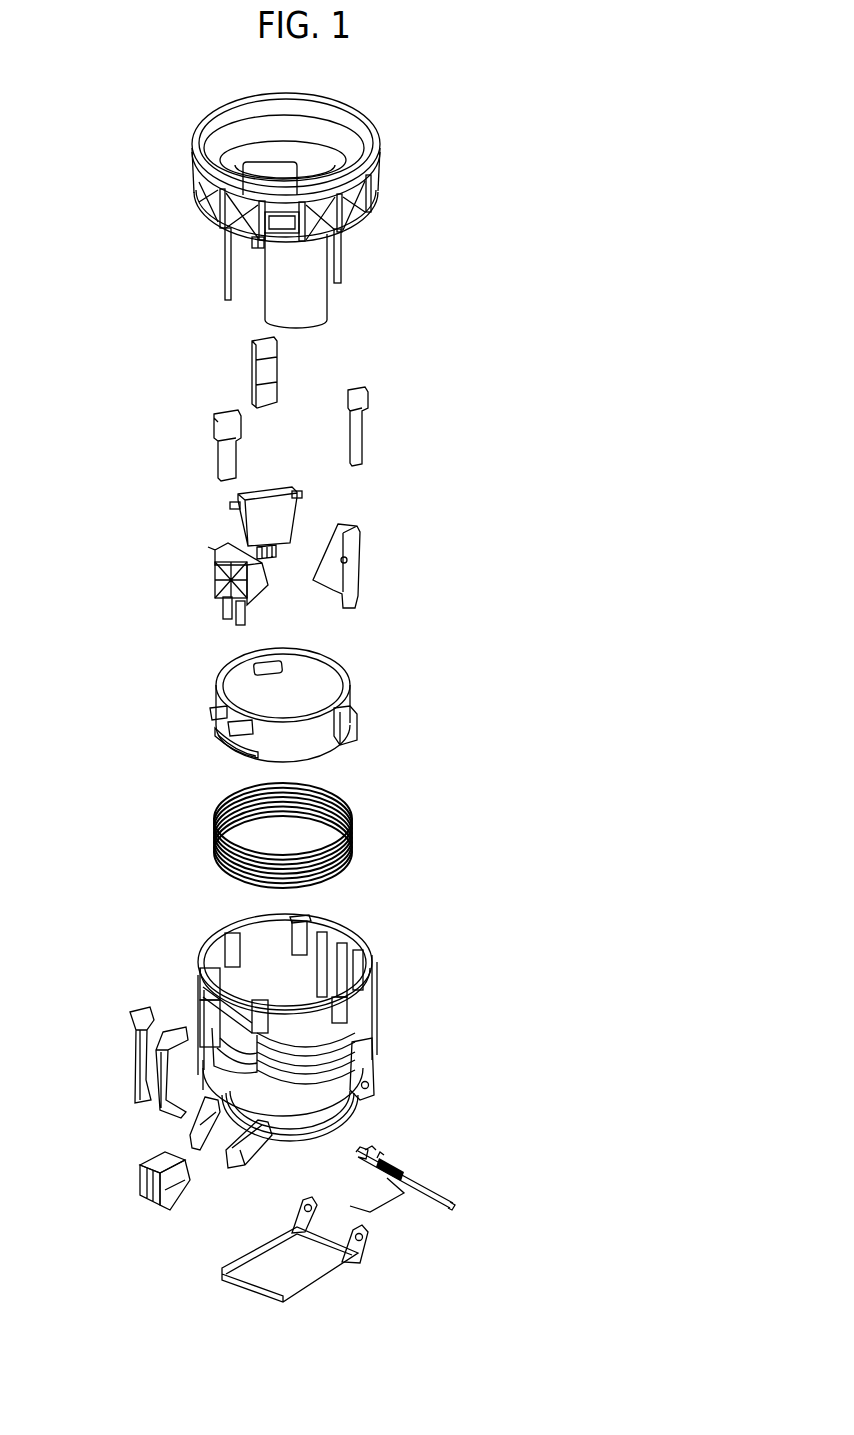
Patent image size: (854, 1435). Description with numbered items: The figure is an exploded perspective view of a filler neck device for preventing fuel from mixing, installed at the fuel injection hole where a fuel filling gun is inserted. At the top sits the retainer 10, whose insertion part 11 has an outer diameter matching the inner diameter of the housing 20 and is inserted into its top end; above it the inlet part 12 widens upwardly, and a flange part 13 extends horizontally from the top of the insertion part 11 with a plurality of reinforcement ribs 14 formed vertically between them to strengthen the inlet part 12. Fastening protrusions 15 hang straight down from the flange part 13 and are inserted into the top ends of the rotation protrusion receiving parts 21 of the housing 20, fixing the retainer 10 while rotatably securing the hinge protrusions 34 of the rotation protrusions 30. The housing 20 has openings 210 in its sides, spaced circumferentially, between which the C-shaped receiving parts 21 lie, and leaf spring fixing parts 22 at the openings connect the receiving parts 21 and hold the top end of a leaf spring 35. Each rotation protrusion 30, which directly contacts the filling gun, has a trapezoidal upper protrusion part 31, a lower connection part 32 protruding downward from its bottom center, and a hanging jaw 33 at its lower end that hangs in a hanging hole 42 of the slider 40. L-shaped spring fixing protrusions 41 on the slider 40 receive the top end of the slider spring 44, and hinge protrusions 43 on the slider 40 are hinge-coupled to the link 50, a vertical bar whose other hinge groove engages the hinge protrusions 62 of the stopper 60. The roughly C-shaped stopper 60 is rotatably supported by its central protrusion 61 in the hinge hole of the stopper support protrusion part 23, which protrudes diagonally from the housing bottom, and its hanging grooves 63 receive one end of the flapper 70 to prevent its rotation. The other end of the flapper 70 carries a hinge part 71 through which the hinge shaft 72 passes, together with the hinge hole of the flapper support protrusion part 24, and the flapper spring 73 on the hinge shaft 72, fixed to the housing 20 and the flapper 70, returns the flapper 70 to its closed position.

The retainer 10 is at (312, 208).
The insertion part 11 is at (322, 290).
The inlet part 12 is at (243, 118).
The flange part 13 is at (256, 248).
The reinforcement ribs 14 is at (200, 212).
The fastening protrusions 15 is at (226, 290).
The housing 20 is at (276, 1077).
The rotation protrusion receiving parts 21 is at (220, 972).
The leaf spring fixing parts 22 is at (200, 1000).
The stopper support protrusion part 23 is at (255, 1148).
The flapper support protrusion part 24 is at (372, 1062).
The openings 210 is at (360, 1035).
The rotation protrusions 30 is at (301, 591).
The upper protrusion parts 31 is at (266, 595).
The lower connection parts 32 is at (225, 613).
The hanging jaws 33 is at (243, 628).
The hinge protrusions 34 is at (220, 583).
The leaf spring 35 is at (368, 412).
The slider 40 is at (296, 708).
The spring fixing protrusions 41 is at (255, 752).
The hanging holes 42 is at (357, 718).
The hinge protrusions 43 is at (212, 712).
The slider spring 44 is at (352, 840).
The link 50 is at (128, 1055).
The stopper 60 is at (121, 1197).
The central protrusion 61 is at (150, 1195).
The hinge protrusions 62 is at (175, 1165).
The hanging grooves 63 is at (182, 1207).
The flapper 70 is at (353, 1204).
The hinge part 71 is at (365, 1255).
The hinge shaft 72 is at (430, 1190).
The flapper spring 73 is at (382, 1160).